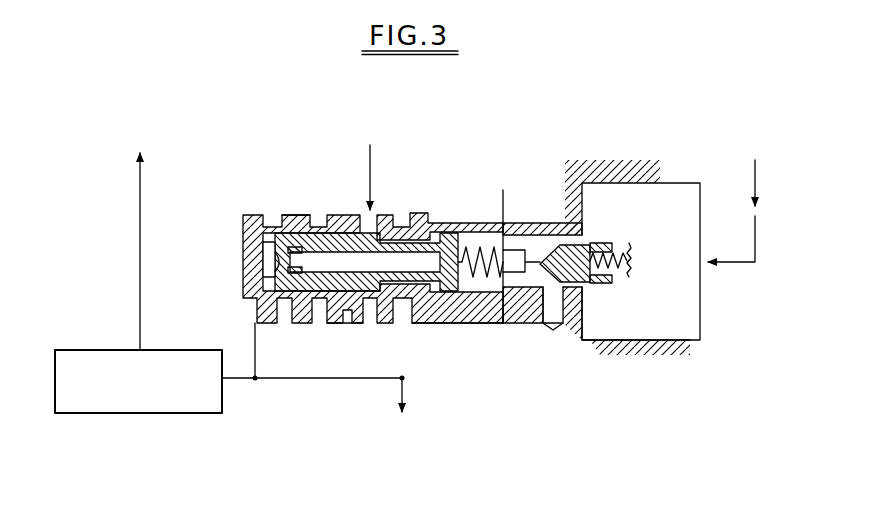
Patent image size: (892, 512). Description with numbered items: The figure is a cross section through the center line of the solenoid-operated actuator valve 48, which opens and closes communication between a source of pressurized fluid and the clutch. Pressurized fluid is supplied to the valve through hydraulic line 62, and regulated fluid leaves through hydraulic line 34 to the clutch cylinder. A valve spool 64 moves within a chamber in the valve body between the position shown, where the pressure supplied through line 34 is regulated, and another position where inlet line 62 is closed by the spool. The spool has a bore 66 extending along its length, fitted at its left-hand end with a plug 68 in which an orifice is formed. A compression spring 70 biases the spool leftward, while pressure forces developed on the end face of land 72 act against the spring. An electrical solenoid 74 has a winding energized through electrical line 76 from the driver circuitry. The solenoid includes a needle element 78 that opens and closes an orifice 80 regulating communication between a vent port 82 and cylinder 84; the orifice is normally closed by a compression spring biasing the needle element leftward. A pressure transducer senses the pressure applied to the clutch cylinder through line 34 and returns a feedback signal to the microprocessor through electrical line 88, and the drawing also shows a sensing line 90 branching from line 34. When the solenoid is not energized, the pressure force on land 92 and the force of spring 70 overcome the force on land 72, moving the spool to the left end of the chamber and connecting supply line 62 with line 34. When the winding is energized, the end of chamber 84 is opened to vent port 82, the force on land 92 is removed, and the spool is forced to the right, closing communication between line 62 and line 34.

The hydraulic line 34 is at (403, 388).
The solenoid-operated actuator valve 48 is at (632, 358).
The hydraulic line 62 is at (372, 167).
The valve spool 64 is at (345, 233).
The bore 66 is at (343, 300).
The plug 68 is at (290, 262).
The compression spring 70 is at (483, 250).
The land 72 is at (300, 213).
The electrical solenoid 74 is at (661, 190).
The electrical line 76 is at (755, 250).
The needle element 78 is at (582, 280).
The orifice 80 is at (533, 268).
The vent port 82 is at (550, 305).
The cylinder 84 is at (462, 232).
The electrical line 88 is at (140, 288).
The sensing line 90 is at (257, 347).
The land 92 is at (440, 292).